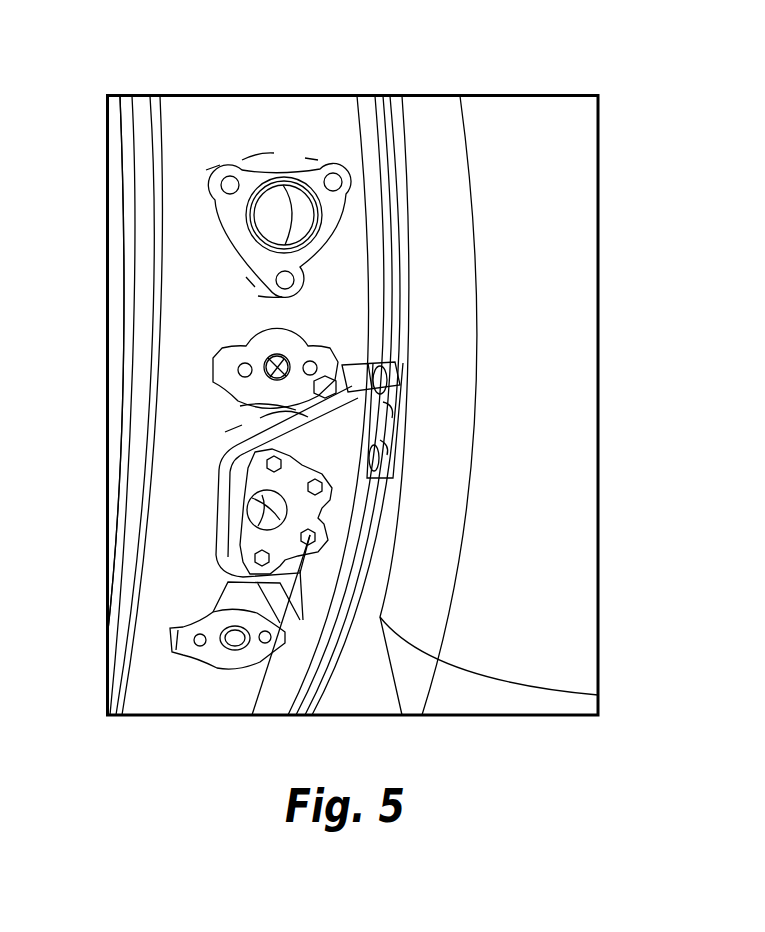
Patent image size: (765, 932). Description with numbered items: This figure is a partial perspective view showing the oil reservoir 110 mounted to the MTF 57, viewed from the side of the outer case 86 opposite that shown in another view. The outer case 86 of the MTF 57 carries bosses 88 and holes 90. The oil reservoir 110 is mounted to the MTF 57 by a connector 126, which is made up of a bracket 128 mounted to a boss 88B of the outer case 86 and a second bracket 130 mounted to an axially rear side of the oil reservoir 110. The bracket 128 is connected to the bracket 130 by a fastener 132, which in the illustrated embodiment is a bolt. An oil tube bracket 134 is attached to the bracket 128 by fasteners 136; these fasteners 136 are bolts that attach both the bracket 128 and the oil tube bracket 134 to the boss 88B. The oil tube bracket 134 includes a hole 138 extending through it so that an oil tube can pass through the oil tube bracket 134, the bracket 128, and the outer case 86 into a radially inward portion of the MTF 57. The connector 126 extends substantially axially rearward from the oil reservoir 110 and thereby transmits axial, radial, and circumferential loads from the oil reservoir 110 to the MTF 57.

The outer case 86 is at (179, 115).
The MTF 57 is at (290, 98).
The bosses 88 is at (238, 209).
The holes 90 is at (302, 230).
The boss 88B is at (222, 447).
The oil reservoir 110 is at (548, 603).
The connector 126 is at (353, 345).
The bracket 128 is at (250, 573).
The bracket 130 is at (400, 428).
The fastener 132 is at (320, 388).
The oil tube bracket 134 is at (288, 556).
The fasteners 136 is at (310, 538).
The hole 138 is at (253, 506).